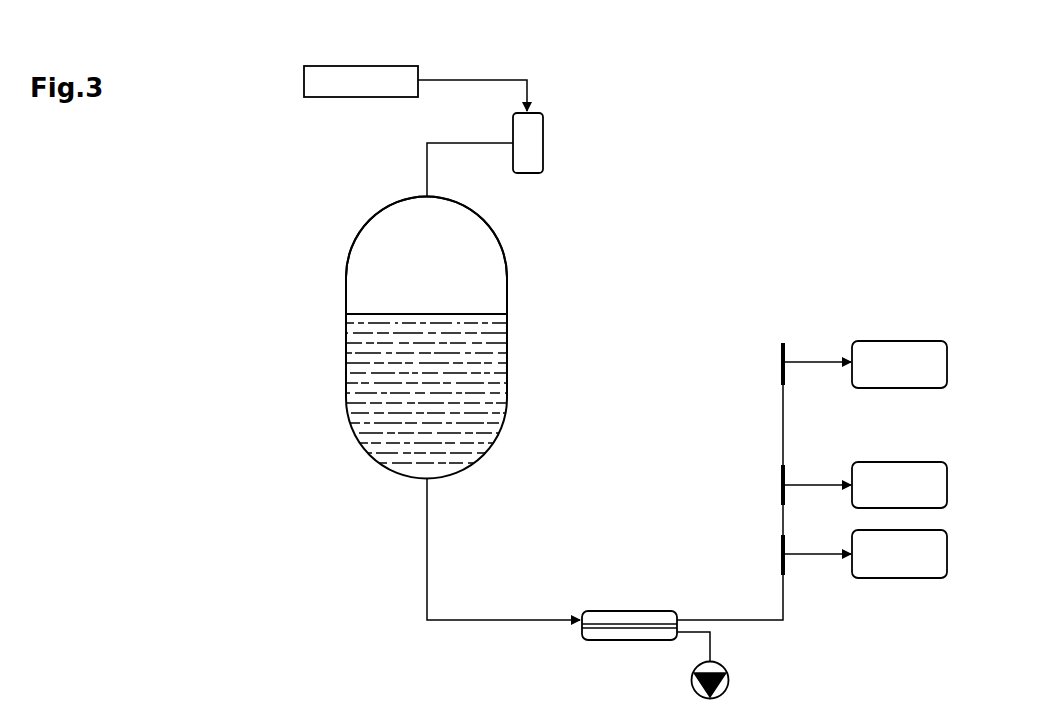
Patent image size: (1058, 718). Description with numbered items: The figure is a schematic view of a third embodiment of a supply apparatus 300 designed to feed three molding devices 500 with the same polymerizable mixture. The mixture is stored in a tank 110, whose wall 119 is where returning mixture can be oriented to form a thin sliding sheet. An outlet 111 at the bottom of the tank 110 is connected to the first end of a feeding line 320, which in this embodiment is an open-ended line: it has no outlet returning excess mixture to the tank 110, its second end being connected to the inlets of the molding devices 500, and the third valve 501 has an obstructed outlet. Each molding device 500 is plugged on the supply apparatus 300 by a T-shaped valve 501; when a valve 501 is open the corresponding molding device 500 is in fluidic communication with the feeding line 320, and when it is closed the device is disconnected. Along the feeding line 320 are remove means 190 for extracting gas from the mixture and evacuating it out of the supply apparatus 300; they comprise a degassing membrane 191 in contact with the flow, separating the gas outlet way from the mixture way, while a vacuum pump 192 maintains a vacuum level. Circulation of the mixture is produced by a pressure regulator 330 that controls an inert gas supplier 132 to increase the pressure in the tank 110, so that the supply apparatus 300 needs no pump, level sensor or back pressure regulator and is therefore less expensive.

The supply apparatus 300 is at (828, 128).
The inert gas supplier 132 is at (388, 66).
The pressure regulator 330 is at (543, 123).
The tank 110 is at (507, 357).
The wall 119 is at (507, 297).
The outlet 111 is at (427, 478).
The remove means 190 is at (622, 611).
The degassing membrane 191 is at (634, 628).
The vacuum pump 192 is at (728, 668).
The feeding line 320 is at (750, 620).
The valve 501 is at (820, 329).
The molding device 500 is at (900, 341).